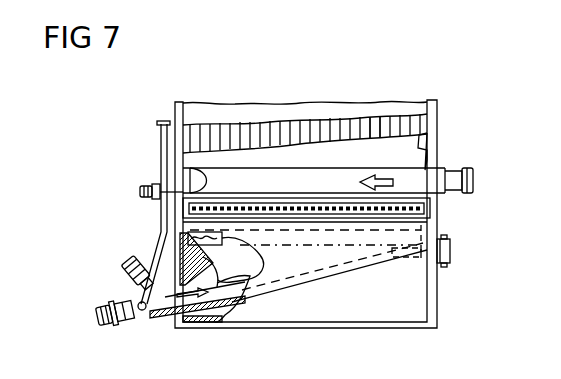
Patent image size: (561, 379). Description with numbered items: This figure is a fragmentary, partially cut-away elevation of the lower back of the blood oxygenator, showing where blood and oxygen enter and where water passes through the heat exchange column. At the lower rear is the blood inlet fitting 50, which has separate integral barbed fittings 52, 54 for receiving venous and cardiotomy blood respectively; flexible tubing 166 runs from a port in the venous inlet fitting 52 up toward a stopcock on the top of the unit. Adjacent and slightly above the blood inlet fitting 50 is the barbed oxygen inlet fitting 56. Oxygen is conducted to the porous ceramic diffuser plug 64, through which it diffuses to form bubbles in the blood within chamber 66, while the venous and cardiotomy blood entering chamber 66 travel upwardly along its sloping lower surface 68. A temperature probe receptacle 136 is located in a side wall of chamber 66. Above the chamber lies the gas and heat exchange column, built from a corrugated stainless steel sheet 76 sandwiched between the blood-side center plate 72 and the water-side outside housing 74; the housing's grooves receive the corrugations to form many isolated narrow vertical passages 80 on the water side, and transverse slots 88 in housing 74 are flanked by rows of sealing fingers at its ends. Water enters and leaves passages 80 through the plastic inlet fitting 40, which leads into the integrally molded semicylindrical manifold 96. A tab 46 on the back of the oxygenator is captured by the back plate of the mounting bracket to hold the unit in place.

The inlet fitting 40 is at (473, 185).
The tab 46 is at (430, 145).
The blood inlet fitting 50 is at (141, 326).
The venous inlet fitting 52 is at (100, 318).
The barbed fitting 54 is at (128, 263).
The oxygen inlet fitting 56 is at (138, 192).
The diffuser plug 64 is at (230, 236).
The chamber 66 is at (329, 272).
The sloping lower surface 68 is at (237, 285).
The center plate 72 is at (233, 112).
The outside housing 74 is at (353, 153).
The corrugated stainless steel sheet 76 is at (285, 127).
The vertical passages 80 is at (383, 122).
The transverse slots 88 is at (412, 205).
The semicylindrical manifold 96 is at (193, 172).
The temperature probe receptacle 136 is at (456, 251).
The flexible tubing 166 is at (157, 258).